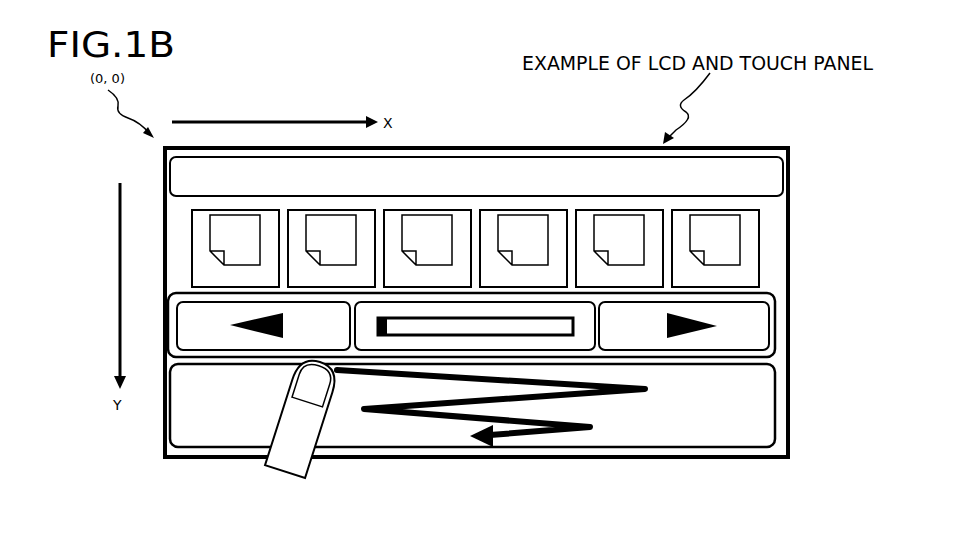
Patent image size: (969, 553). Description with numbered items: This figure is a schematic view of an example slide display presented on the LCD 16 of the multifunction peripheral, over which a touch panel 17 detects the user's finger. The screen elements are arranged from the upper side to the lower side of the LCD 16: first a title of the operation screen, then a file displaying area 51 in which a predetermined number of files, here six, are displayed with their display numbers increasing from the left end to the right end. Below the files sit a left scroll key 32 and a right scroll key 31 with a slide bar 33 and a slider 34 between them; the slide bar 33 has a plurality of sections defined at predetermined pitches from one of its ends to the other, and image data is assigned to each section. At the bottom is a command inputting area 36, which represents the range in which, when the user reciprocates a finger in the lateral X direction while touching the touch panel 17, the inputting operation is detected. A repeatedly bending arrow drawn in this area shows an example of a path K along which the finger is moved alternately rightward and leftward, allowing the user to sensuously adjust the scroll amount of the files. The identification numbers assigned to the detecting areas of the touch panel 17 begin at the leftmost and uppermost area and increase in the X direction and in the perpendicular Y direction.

The LCD 16 is at (782, 175).
The touch panel 17 is at (521, 302).
The file displaying area 51 is at (807, 208).
The right scroll key 31 is at (483, 325).
The left scroll key 32 is at (197, 323).
The slide bar 33 is at (472, 325).
The slider 34 is at (378, 323).
The command inputting area 36 is at (230, 433).
The path K is at (602, 397).